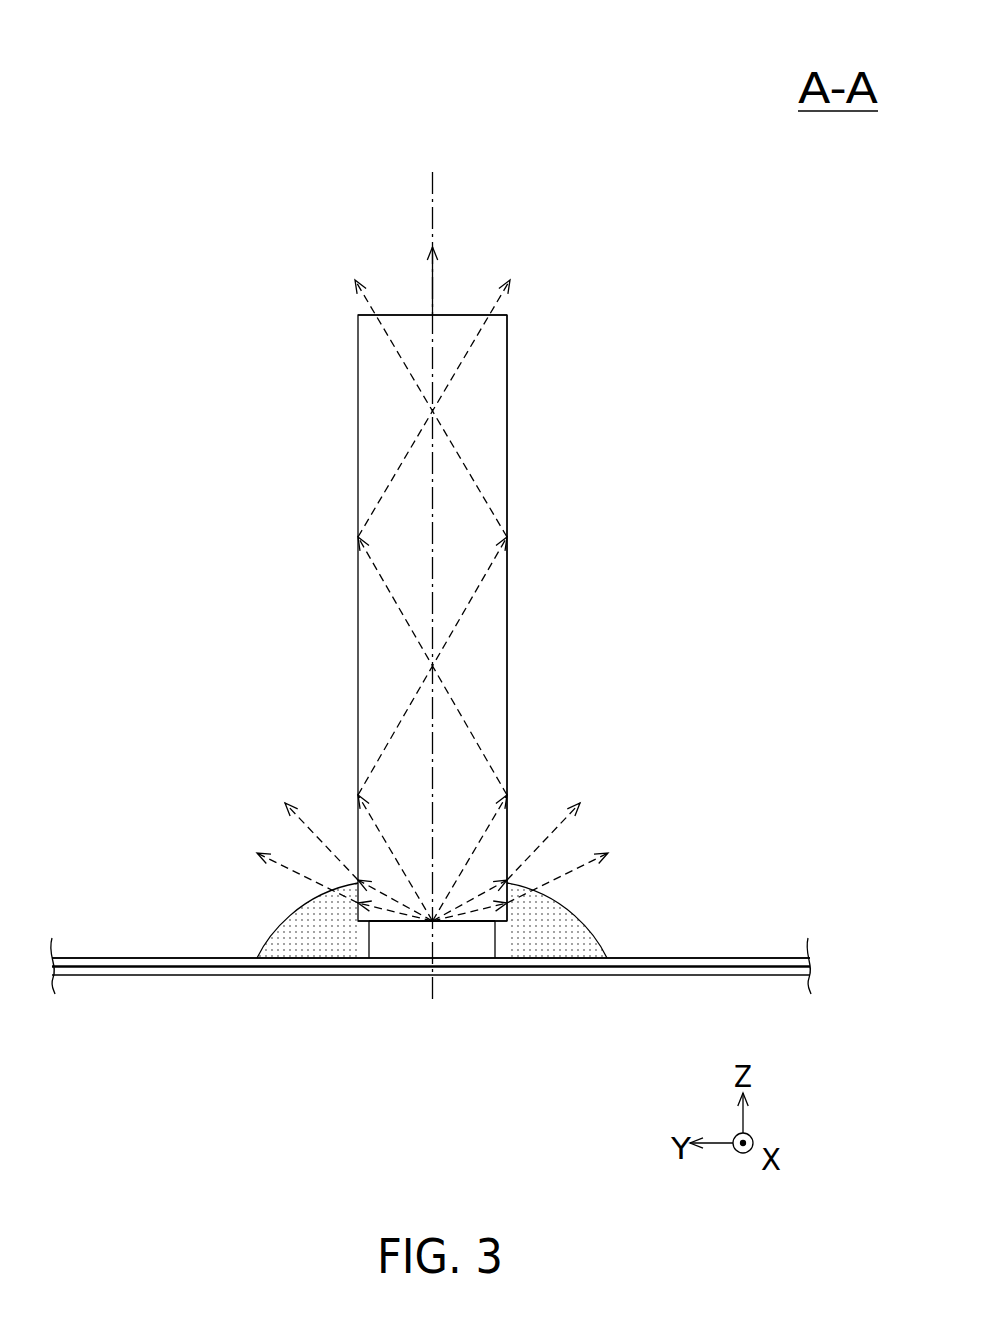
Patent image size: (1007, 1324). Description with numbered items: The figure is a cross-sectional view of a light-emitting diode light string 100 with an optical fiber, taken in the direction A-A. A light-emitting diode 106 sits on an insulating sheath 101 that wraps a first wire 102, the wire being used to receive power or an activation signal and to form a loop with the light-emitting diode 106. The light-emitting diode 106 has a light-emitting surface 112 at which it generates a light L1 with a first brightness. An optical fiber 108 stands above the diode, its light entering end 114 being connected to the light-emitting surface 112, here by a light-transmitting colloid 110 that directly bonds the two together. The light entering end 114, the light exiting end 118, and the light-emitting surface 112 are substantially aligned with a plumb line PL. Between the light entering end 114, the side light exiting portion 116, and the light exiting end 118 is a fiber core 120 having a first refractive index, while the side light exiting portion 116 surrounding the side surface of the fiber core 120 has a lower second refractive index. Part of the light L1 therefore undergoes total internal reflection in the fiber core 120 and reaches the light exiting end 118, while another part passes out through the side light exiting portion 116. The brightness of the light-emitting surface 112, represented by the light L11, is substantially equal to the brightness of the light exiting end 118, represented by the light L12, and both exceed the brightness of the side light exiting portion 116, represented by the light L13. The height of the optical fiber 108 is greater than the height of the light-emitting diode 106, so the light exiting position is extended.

The light-emitting diode light string with an optical fiber 100 is at (53, 83).
The insulating sheath 101 is at (735, 958).
The first wire 102 is at (113, 958).
The light-emitting diode 106 is at (380, 942).
The optical fiber 108 is at (357, 637).
The light-transmitting colloid 110 is at (297, 947).
The light-emitting surface 112 is at (456, 909).
The light entering end 114 is at (418, 923).
The side light exiting portion 116 is at (509, 628).
The light exiting end 118 is at (463, 314).
The fiber core 120 is at (475, 415).
The plumb line PL is at (436, 570).
The light L1 is at (414, 862).
The light L11 is at (464, 867).
The light L12 is at (408, 393).
The light L13 is at (513, 537).